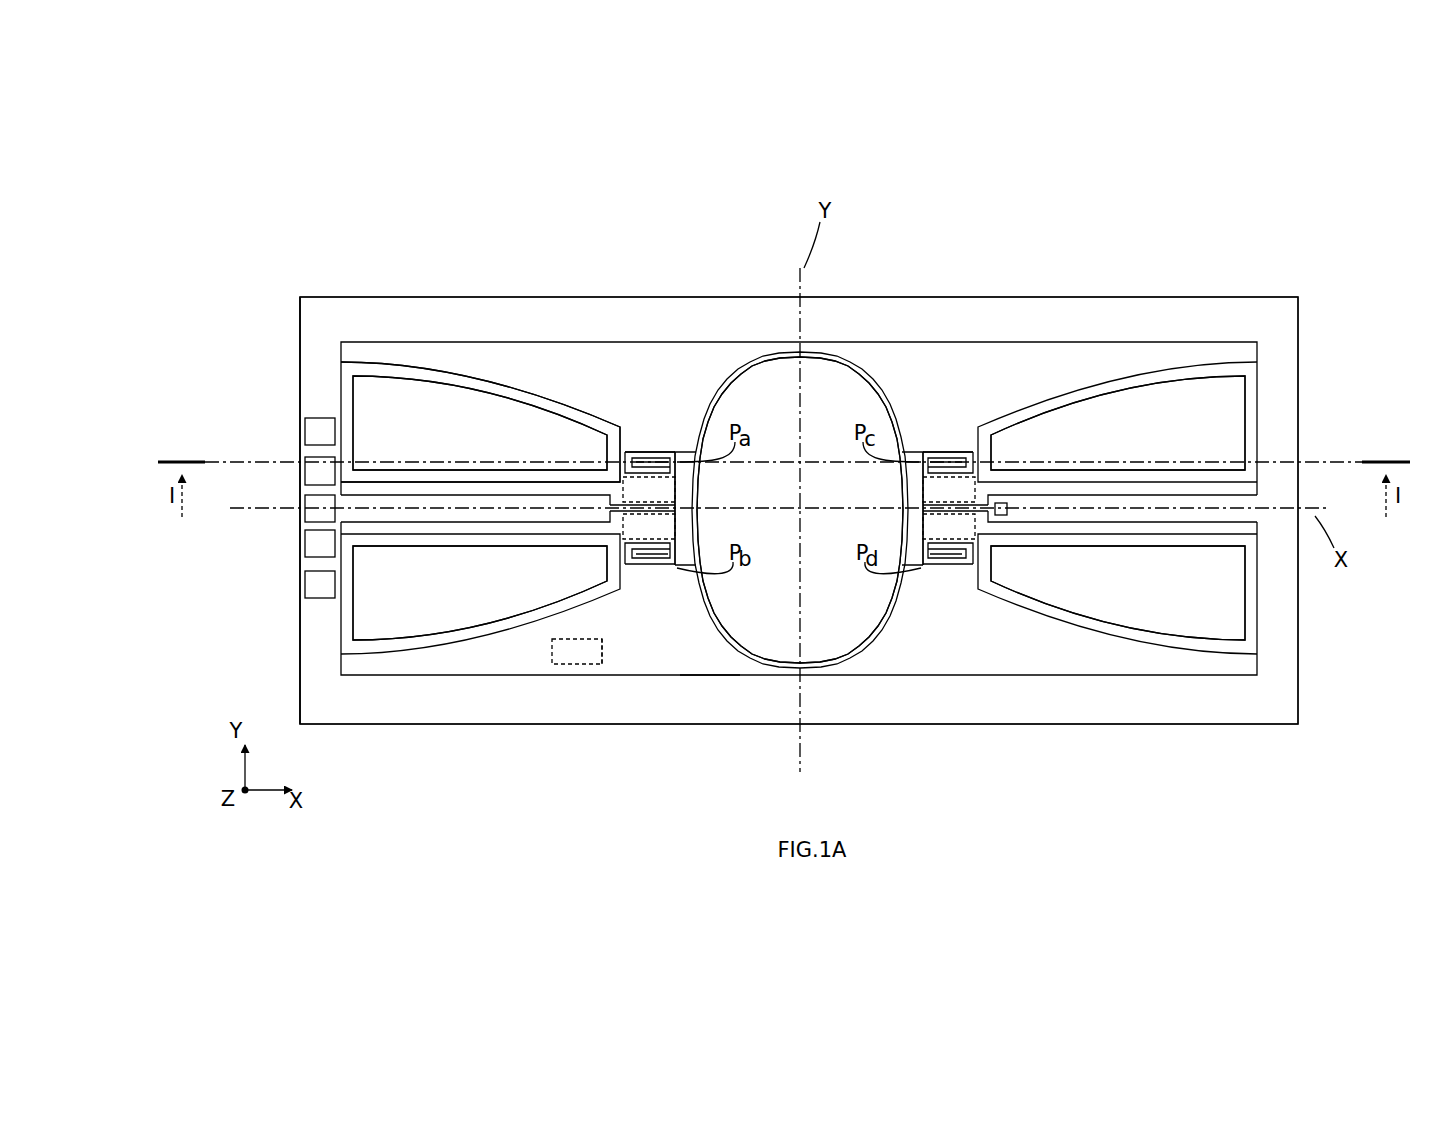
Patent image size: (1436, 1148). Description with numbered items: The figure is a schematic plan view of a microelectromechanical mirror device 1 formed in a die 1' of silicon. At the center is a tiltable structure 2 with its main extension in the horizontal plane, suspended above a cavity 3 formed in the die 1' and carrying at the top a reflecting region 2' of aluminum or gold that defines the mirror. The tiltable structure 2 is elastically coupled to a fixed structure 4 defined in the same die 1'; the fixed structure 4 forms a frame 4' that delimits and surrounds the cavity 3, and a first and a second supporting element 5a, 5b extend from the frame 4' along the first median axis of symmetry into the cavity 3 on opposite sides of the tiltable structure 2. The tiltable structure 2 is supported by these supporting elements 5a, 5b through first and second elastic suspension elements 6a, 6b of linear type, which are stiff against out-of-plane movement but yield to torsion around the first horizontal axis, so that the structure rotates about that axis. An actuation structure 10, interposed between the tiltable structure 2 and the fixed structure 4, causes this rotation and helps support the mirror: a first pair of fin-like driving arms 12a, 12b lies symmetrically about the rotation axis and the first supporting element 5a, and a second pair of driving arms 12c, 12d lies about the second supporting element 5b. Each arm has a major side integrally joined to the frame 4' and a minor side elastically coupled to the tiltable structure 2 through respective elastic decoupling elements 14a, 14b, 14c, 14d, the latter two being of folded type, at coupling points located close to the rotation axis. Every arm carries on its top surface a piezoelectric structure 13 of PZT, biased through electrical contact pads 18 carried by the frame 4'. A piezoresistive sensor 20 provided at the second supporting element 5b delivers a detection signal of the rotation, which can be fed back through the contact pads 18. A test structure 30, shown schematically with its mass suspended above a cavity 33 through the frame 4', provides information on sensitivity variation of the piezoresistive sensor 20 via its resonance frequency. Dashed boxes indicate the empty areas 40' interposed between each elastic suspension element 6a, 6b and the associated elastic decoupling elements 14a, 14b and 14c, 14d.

The microelectromechanical device 1 is at (762, 432).
The die 1' is at (264, 510).
The tiltable structure 2 is at (799, 567).
The reflecting region 2' is at (800, 510).
The cavity 3 is at (721, 666).
The fixed structure 4 is at (799, 436).
The frame 4' is at (799, 470).
The first supporting element 5a is at (402, 516).
The second supporting element 5b is at (1183, 513).
The first elastic suspension element 6a is at (642, 451).
The second elastic suspension element 6b is at (936, 451).
The actuation structure 10 is at (417, 360).
The first driving arm 12a is at (467, 375).
The second driving arm 12b is at (524, 623).
The third driving arm 12c is at (1118, 378).
The fourth driving arm 12d is at (1069, 622).
The piezoelectric structure 13 is at (541, 420).
The first elastic decoupling element 14a is at (662, 451).
The second elastic decoupling element 14b is at (665, 566).
The third elastic decoupling element 14c is at (952, 451).
The fourth elastic decoupling element 14d is at (946, 566).
The electrical contact pads 18 is at (306, 498).
The piezoresistive sensor 20 is at (1001, 516).
The test structure 30 is at (567, 668).
The cavity 33 is at (596, 660).
The empty area 40' is at (815, 453).